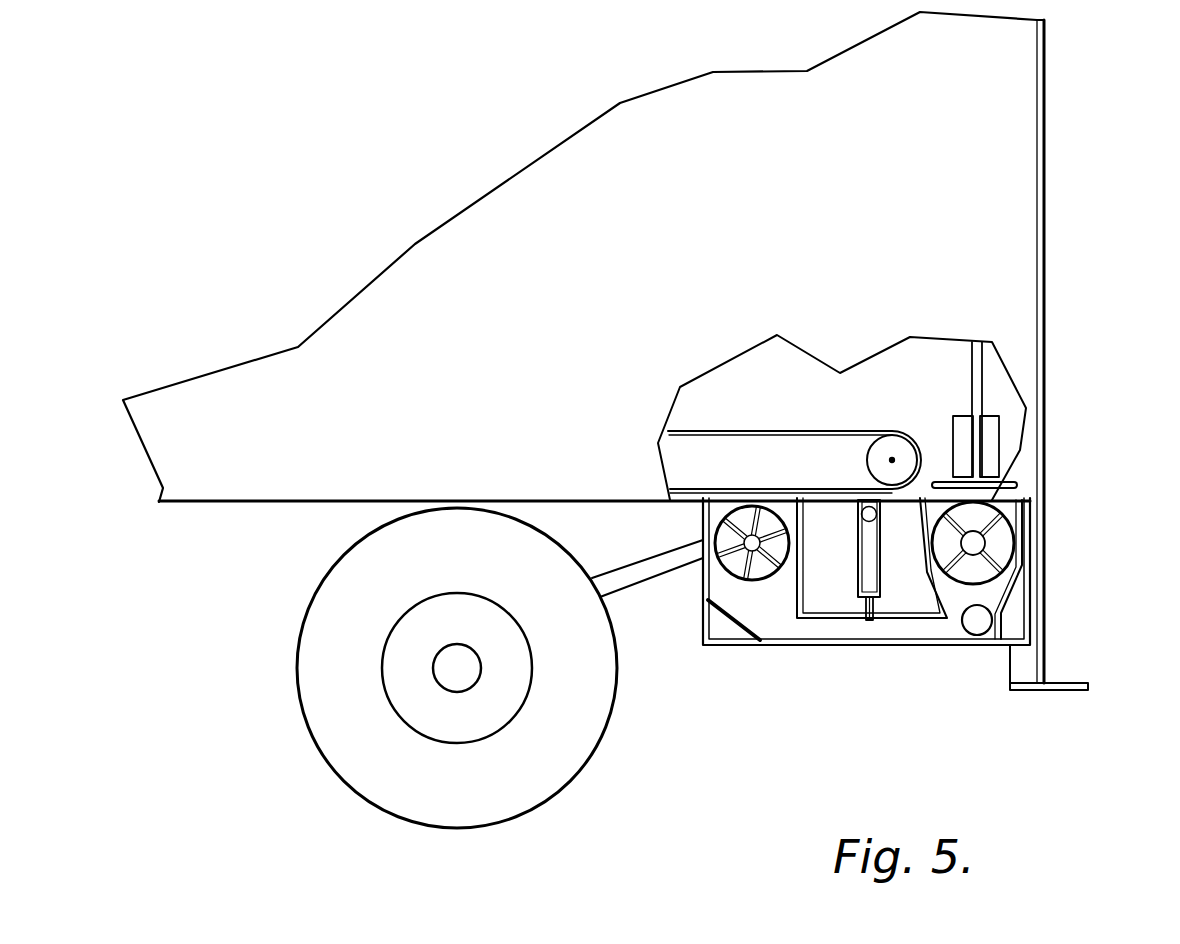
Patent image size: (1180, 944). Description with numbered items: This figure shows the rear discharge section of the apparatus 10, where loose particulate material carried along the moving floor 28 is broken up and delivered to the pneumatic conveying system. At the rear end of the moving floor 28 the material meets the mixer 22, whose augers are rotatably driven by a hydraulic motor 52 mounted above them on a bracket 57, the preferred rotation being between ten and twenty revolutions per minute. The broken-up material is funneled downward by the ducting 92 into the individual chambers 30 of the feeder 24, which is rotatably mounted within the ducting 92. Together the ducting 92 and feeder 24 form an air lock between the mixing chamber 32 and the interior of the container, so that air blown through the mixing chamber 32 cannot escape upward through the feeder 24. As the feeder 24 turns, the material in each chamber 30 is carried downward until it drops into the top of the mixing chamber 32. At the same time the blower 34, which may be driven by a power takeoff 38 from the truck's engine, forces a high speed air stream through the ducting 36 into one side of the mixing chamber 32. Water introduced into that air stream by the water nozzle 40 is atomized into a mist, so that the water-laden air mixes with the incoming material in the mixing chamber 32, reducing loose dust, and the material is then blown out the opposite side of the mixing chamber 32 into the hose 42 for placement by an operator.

The harvesting vehicle body 10 is at (1050, 148).
The mixer 22 is at (993, 368).
The feeder 24 is at (1022, 514).
The moving floor 28 is at (781, 431).
The chambers 30 is at (1002, 547).
The mixing chamber 32 is at (1008, 601).
The blower 34 is at (743, 573).
The ducting 36 is at (823, 628).
The power takeoff 38 is at (668, 570).
The water nozzle 40 is at (880, 612).
The hose 42 is at (978, 632).
The hydraulic motor 52 is at (887, 433).
The mounting plate 57 is at (998, 478).
The ducting 92 is at (922, 518).